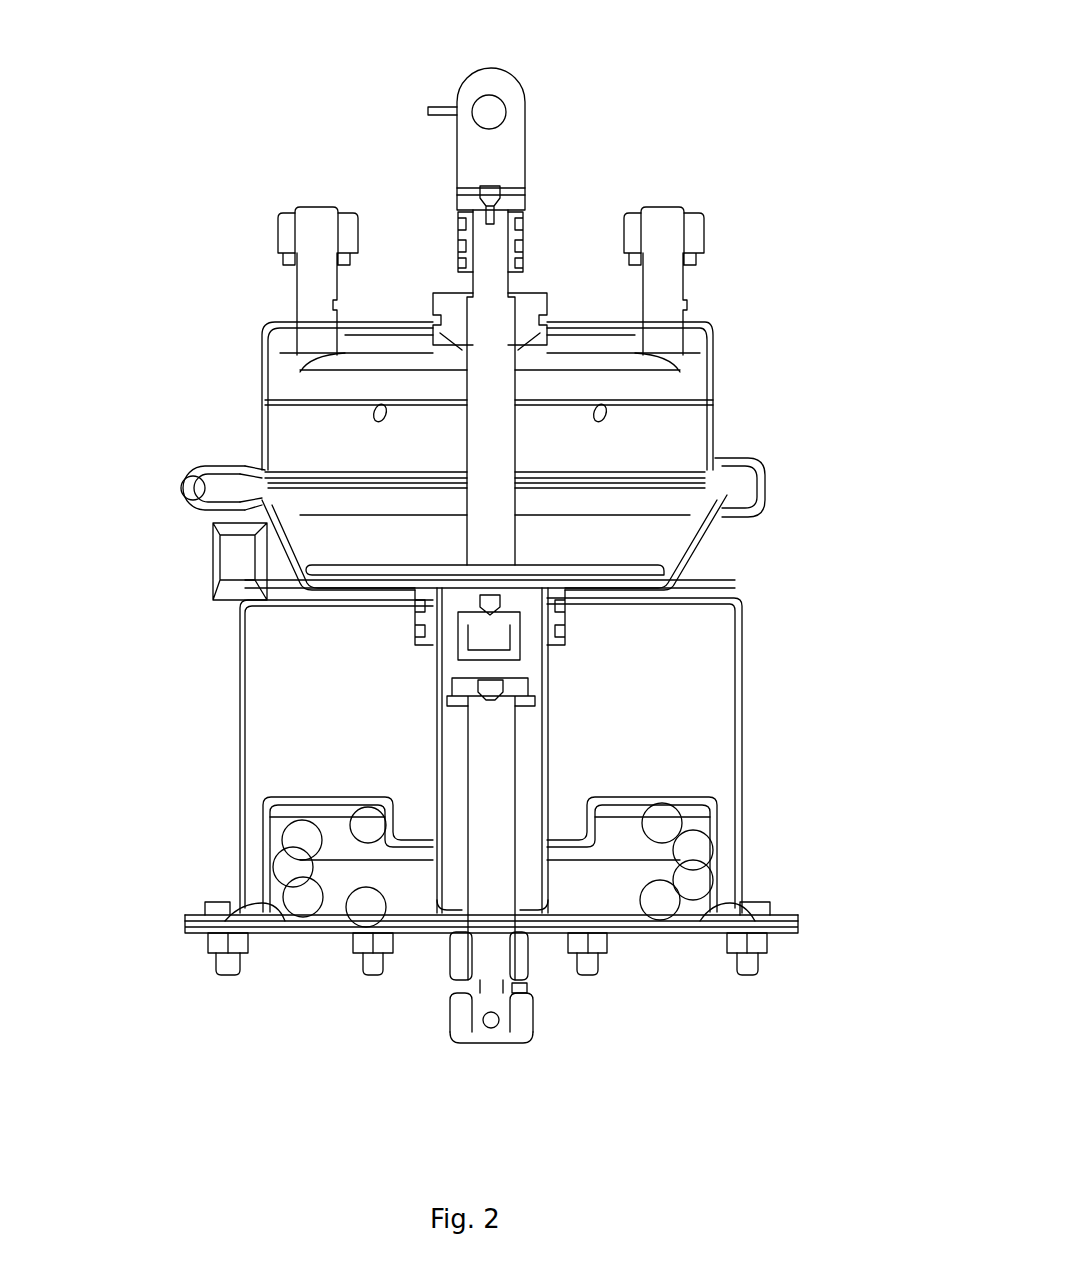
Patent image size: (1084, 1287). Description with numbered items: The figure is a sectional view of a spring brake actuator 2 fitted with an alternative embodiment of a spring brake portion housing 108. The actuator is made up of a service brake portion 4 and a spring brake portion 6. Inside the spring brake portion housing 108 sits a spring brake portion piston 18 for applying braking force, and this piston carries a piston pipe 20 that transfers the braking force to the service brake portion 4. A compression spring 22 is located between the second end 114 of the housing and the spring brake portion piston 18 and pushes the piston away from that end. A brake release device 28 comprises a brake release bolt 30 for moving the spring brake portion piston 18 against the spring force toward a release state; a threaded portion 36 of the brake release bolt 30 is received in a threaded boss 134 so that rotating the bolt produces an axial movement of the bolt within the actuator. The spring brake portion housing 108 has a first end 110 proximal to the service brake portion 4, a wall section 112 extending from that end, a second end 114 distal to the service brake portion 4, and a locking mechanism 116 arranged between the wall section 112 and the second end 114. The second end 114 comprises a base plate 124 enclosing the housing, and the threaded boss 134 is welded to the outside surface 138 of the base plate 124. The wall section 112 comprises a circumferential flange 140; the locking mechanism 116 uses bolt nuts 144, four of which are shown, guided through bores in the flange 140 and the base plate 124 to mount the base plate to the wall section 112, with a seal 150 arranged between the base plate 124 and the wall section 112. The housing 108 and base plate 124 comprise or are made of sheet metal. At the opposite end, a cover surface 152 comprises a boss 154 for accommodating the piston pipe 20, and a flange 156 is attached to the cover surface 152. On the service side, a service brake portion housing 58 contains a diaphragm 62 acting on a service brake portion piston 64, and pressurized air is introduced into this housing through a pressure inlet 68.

The spring brake actuator 2 is at (210, 128).
The service brake portion 4 is at (720, 132).
The spring brake portion 6 is at (128, 1035).
The spring brake portion piston 18 is at (700, 805).
The piston pipe 20 is at (545, 695).
The compression spring 22 is at (305, 905).
The brake release device 28 is at (468, 1050).
The brake release bolt 30 is at (495, 830).
The threaded portion 36 is at (505, 958).
The service brake portion housing 58 is at (755, 422).
The diaphragm 62 is at (284, 478).
The service brake portion piston 64 is at (340, 572).
The pressure inlet 68 is at (220, 590).
The spring brake portion housing 108 is at (238, 795).
The first end 110 is at (757, 632).
The wall section 112 is at (742, 745).
The second end 114 is at (745, 998).
The locking mechanism 116 is at (808, 920).
The base plate 124 is at (640, 940).
The threaded boss 134 is at (462, 958).
The outside surface 138 is at (690, 952).
The circumferential flange 140 is at (190, 913).
The bolt nut 144 is at (232, 985).
The seal 150 is at (740, 930).
The cover surface 152 is at (722, 598).
The boss 154 is at (420, 630).
The flange 156 is at (710, 540).